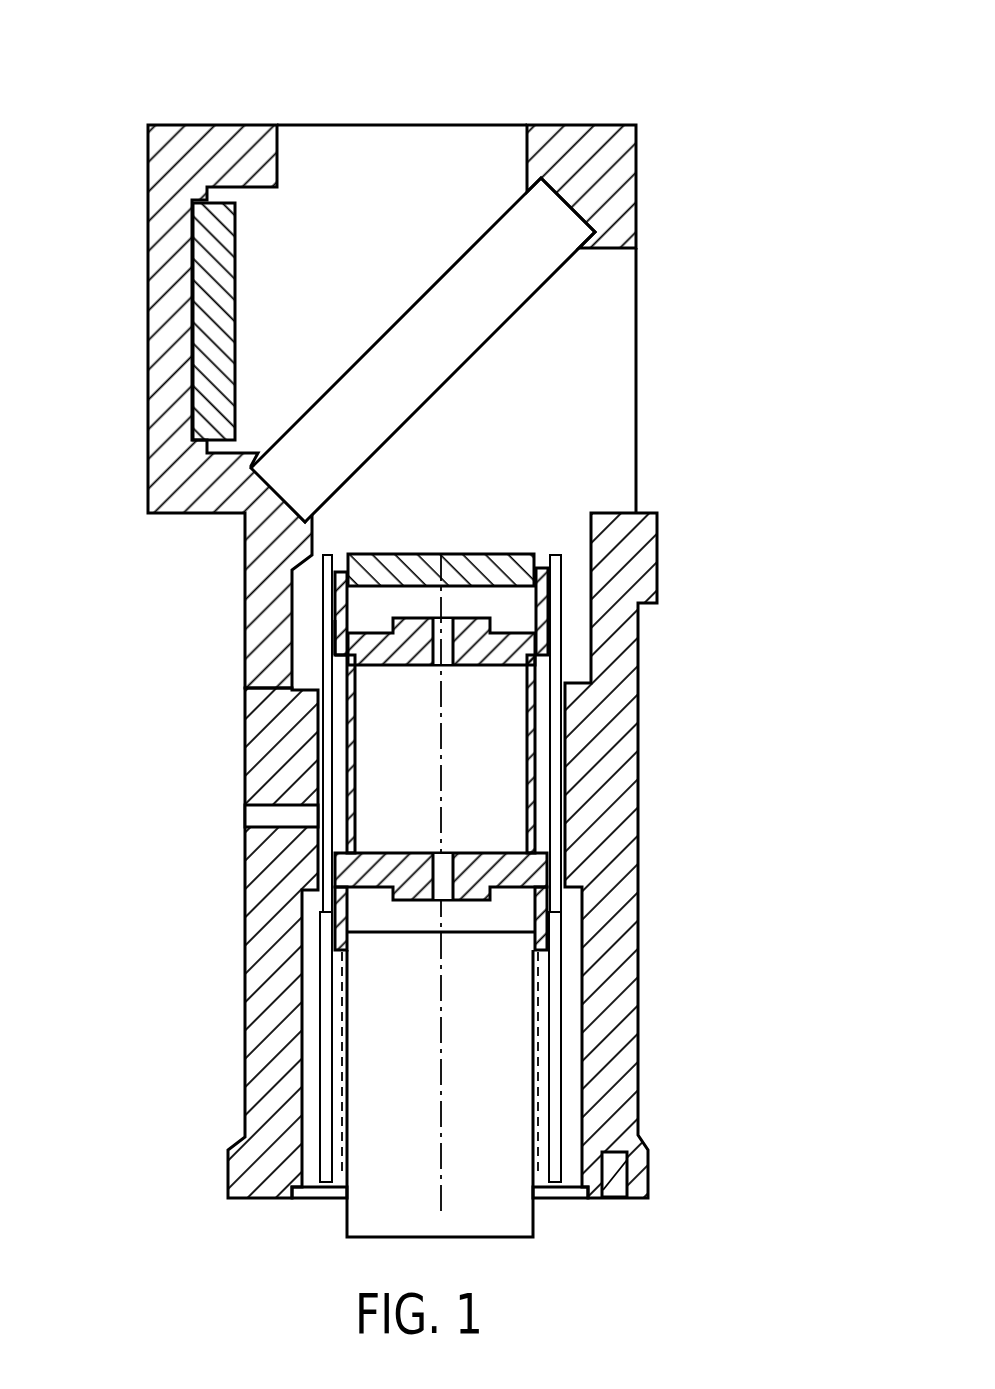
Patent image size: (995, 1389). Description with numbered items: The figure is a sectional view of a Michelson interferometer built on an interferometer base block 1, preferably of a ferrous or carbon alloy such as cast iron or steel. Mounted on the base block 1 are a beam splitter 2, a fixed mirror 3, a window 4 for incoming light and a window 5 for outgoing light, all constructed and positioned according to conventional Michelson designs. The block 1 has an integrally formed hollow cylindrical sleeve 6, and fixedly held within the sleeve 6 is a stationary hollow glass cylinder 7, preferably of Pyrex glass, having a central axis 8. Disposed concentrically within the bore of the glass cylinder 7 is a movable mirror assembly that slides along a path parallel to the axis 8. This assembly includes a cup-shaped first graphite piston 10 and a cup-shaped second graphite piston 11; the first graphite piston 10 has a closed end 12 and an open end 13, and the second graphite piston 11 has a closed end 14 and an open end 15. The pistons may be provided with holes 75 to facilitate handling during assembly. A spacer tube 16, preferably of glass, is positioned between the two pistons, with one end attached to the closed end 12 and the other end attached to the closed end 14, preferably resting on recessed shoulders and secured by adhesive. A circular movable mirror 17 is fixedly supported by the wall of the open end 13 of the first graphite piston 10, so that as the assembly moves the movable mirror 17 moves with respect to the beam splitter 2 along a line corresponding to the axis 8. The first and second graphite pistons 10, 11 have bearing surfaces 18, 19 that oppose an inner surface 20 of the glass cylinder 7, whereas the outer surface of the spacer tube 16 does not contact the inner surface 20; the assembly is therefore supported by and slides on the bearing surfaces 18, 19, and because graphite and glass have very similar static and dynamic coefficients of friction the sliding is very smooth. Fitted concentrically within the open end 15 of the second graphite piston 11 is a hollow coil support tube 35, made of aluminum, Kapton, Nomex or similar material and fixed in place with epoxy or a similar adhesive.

The interferometer base block 1 is at (571, 118).
The beam splitter 2 is at (499, 214).
The fixed mirror 3 is at (202, 297).
The window for incoming light 4 is at (311, 118).
The window for outgoing light 5 is at (642, 357).
The hollow cylindrical sleeve 6 is at (244, 797).
The glass cylinder 7 is at (319, 597).
The central axis 8 is at (444, 728).
The first graphite piston 10 is at (550, 622).
The second graphite piston 11 is at (549, 916).
The closed end of first graphite piston 12 is at (397, 673).
The open end of first graphite piston 13 is at (550, 564).
The closed end of second graphite piston 14 is at (489, 845).
The open end of second graphite piston 15 is at (509, 934).
The spacer tube 16 is at (341, 762).
The movable mirror 17 is at (479, 548).
The bearing surface of first graphite piston 18 is at (333, 640).
The bearing surface of second graphite piston 19 is at (329, 910).
The inner surface of glass cylinder 20 is at (554, 1101).
The coil support tube 35 is at (539, 1218).
The holes 75 is at (431, 875).